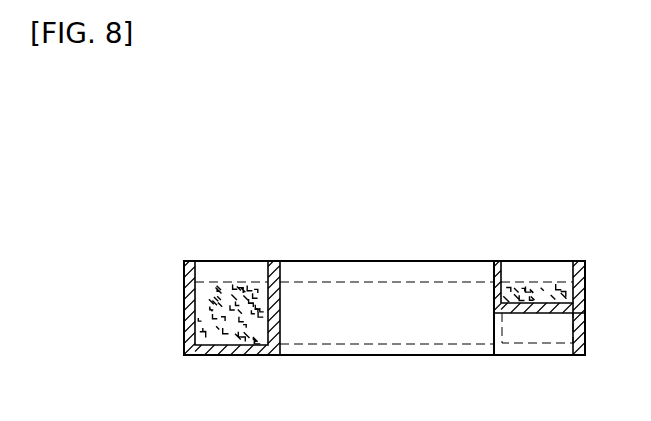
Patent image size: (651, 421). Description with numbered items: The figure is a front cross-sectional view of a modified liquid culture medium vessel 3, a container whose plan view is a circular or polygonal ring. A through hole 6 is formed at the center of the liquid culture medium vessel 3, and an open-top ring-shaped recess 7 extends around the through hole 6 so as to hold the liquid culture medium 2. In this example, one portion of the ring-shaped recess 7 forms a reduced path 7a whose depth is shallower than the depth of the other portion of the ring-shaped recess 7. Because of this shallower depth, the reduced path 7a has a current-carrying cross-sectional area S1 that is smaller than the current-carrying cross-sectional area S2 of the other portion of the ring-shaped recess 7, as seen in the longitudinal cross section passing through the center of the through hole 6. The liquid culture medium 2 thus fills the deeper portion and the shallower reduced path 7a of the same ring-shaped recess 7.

The liquid culture medium vessel 3 is at (437, 252).
The through hole 6 is at (398, 318).
The ring-shaped recess 7 is at (259, 341).
The reduced path 7a is at (547, 271).
The liquid culture medium 2 is at (219, 308).
The current-carrying cross-sectional area of the other portion S2 is at (198, 315).
The current-carrying cross-sectional area of the reduced path S1 is at (515, 296).